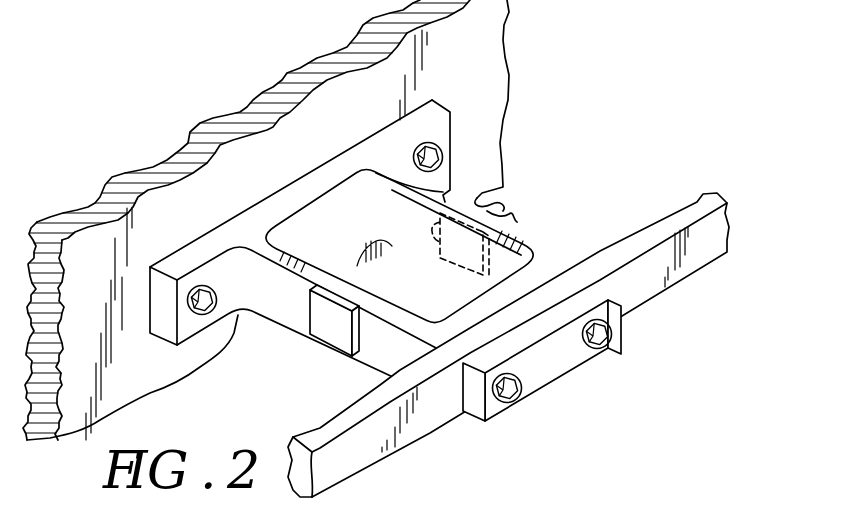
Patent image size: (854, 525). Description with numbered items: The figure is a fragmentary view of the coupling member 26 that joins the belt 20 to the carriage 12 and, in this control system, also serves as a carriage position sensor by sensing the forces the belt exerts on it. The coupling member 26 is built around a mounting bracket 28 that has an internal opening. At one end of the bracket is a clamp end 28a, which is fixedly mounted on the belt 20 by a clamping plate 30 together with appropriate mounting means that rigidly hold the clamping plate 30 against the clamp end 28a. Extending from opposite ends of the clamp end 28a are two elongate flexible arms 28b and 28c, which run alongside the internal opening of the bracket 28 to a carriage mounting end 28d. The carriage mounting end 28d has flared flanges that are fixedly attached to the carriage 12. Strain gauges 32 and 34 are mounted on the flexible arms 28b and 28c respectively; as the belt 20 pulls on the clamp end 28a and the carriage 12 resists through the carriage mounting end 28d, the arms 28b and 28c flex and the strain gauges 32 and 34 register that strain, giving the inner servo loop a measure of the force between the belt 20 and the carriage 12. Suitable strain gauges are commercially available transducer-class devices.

The carriage 12 is at (483, 50).
The belt 20 is at (682, 212).
The coupling member 26 is at (381, 244).
The mounting bracket 28 is at (368, 244).
The clamp end 28a is at (550, 372).
The elongate flexible arm 28b is at (310, 308).
The elongate flexible arm 28c is at (418, 255).
The carriage mounting end 28d is at (350, 160).
The clamping plate 30 is at (493, 305).
The strain gauge 32 is at (344, 340).
The strain gauge 34 is at (536, 256).